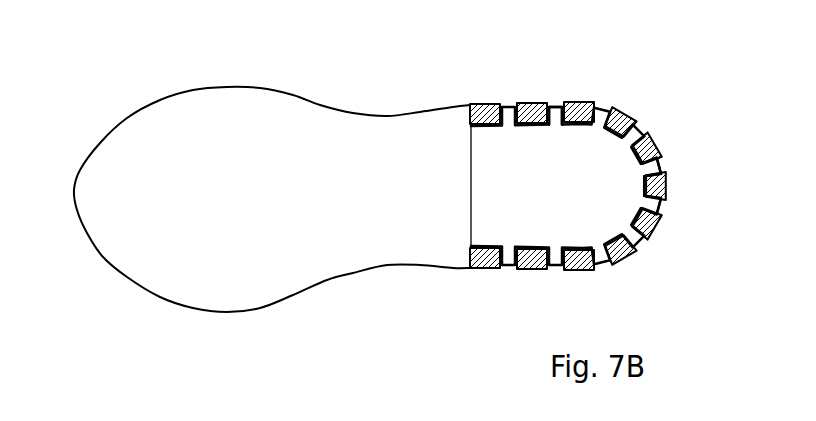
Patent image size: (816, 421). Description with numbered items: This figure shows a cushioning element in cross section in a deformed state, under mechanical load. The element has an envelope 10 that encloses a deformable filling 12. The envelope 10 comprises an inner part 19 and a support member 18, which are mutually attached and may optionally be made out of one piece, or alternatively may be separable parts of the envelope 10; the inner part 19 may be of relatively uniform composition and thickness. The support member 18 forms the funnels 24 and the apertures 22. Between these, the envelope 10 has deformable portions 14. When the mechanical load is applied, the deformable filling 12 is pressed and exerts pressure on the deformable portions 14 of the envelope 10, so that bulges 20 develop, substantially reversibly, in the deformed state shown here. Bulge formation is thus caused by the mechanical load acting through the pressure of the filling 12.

The envelope 10 is at (589, 173).
The deformable filling 12 is at (511, 220).
The deformable portions 14 is at (643, 245).
The support member 18 is at (532, 103).
The inner part 19 is at (638, 122).
The bulges 20 is at (557, 104).
The apertures 22 is at (663, 165).
The funnels 24 is at (665, 207).